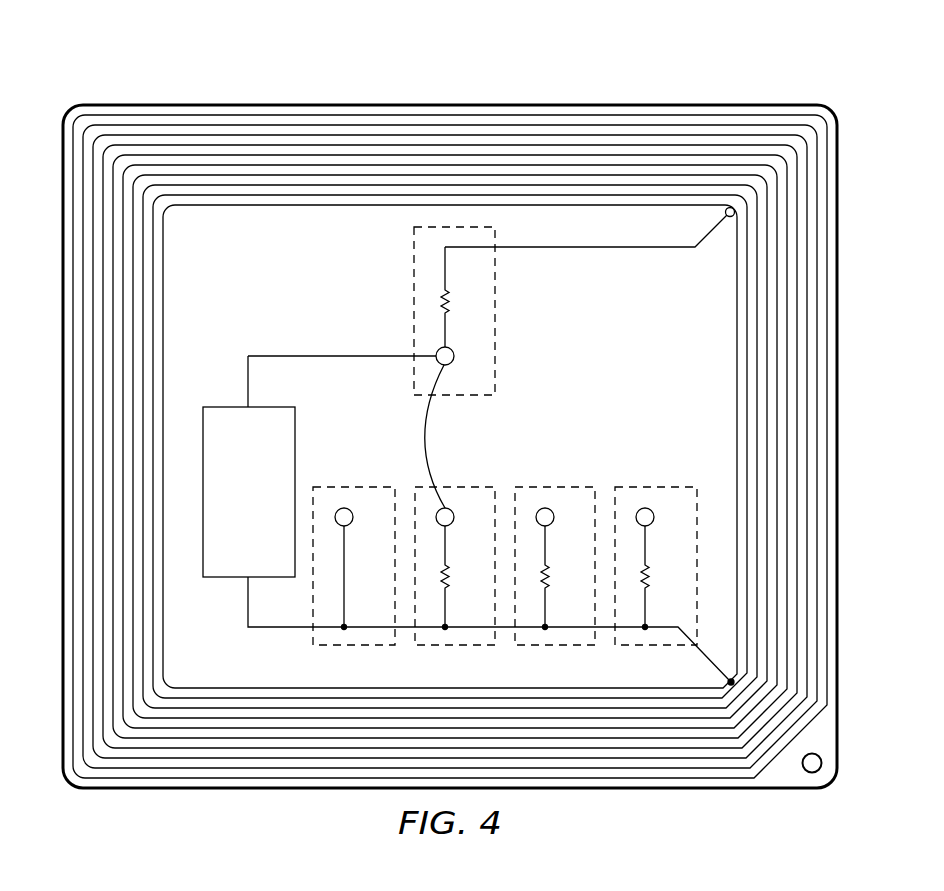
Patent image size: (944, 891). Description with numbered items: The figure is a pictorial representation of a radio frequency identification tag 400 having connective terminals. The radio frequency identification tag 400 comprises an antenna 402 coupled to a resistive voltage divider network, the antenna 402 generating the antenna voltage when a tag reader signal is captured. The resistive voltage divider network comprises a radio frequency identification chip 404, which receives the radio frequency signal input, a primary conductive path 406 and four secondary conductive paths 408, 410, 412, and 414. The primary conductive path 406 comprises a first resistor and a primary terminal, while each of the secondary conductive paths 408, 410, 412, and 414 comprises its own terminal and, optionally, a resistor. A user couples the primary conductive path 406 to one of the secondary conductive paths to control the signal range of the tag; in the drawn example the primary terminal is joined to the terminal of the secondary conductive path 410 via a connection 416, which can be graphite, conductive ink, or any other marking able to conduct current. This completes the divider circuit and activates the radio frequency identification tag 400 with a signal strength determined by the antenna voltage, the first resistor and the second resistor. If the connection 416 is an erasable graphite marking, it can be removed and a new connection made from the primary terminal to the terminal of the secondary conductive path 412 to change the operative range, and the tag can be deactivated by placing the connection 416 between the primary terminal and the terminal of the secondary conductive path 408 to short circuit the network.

The radio frequency identification tag 400 is at (708, 50).
The antenna 402 is at (316, 104).
The radio frequency identification chip 404 is at (230, 406).
The primary conductive path 406 is at (413, 281).
The secondary conductive path 408 is at (334, 485).
The secondary conductive path 410 is at (476, 485).
The secondary conductive path 412 is at (576, 485).
The secondary conductive path 414 is at (676, 485).
The connection 416 is at (410, 453).